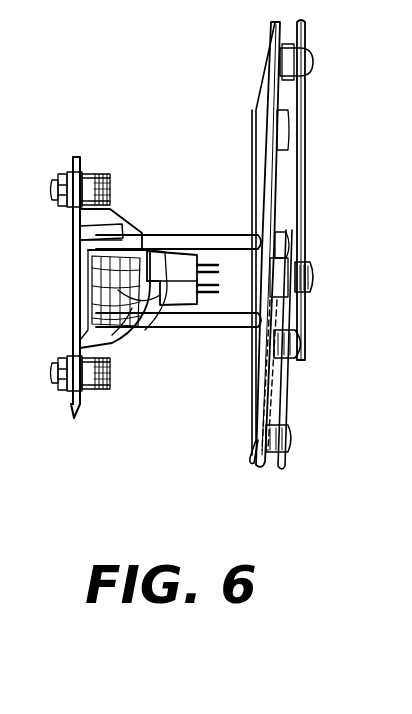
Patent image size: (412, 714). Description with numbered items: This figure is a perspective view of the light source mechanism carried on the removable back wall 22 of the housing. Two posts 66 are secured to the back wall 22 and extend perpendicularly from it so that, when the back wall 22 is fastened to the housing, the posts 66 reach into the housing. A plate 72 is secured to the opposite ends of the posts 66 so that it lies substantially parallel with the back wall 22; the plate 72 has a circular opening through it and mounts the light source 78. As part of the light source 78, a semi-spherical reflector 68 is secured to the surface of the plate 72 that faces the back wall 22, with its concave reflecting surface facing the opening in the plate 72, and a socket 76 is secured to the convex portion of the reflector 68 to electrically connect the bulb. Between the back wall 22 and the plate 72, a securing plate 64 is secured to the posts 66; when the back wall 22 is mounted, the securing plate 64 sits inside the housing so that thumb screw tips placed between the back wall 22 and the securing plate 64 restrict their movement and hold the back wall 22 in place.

The back wall 22 is at (308, 163).
The securing plate 64 is at (263, 110).
The posts 66 is at (207, 236).
The semi-spherical reflector 68 is at (140, 338).
The plate 72 is at (64, 222).
The socket 76 is at (173, 246).
The light source 78 is at (131, 146).